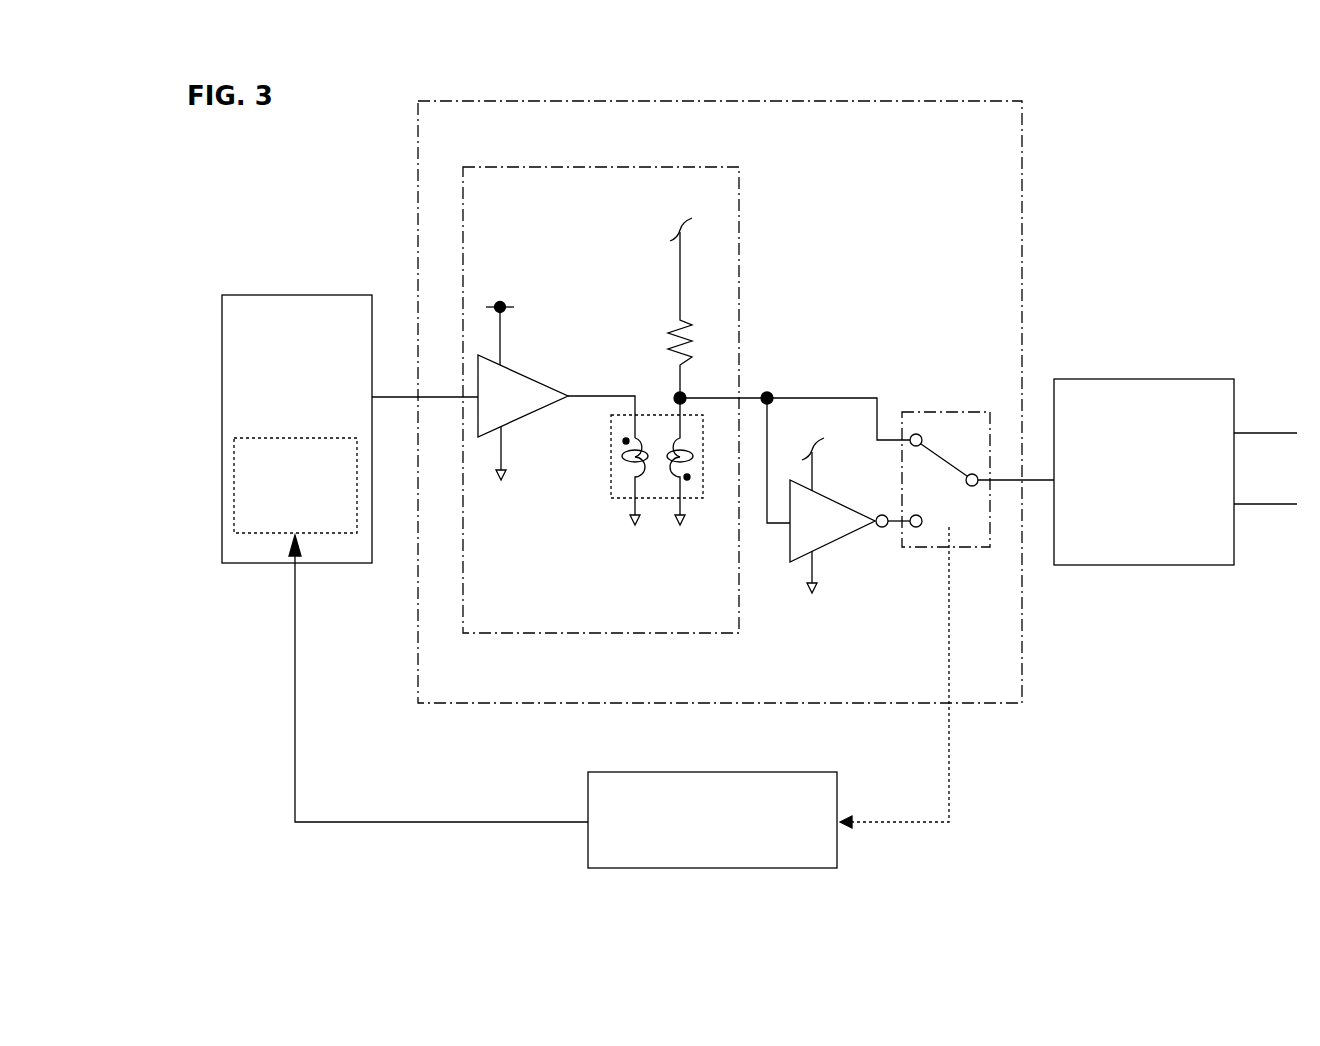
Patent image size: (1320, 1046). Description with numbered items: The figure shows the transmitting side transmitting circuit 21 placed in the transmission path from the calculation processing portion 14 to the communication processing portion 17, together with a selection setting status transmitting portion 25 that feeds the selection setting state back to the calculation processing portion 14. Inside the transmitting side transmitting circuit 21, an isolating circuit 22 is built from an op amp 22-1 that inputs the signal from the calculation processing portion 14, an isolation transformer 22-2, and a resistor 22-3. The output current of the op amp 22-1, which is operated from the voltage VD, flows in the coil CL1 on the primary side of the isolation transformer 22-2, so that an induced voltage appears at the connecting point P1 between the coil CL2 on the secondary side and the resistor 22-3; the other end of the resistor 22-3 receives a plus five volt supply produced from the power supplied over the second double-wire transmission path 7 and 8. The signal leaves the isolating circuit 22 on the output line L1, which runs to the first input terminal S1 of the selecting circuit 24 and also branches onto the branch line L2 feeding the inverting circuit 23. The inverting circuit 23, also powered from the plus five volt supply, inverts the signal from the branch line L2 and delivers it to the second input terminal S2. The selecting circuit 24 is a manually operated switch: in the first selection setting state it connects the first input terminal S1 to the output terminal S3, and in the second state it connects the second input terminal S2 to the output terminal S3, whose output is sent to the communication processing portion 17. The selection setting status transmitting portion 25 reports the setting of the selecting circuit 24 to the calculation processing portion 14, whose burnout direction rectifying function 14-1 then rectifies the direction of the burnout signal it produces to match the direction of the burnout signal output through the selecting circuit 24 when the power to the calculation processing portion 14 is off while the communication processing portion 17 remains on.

The calculation processing portion 14 is at (262, 294).
The burnout direction rectifying function 14-1 is at (234, 482).
The transmitting side transmitting circuit 21 is at (975, 100).
The isolating circuit 22 is at (741, 186).
The op amp 22-1 is at (524, 380).
The isolation transformer 22-2 is at (639, 480).
The resistor 22-3 is at (660, 326).
The inverting circuit 23 is at (826, 541).
The selecting circuit 24 is at (946, 479).
The selection setting status transmitting portion 25 is at (839, 786).
The communication processing portion 17 is at (1168, 378).
The second double-wire transmission path 7 is at (1272, 432).
The second double-wire transmission path 8 is at (1268, 505).
The connecting point P1 is at (662, 398).
The output line L1 is at (742, 396).
The branch line L2 is at (778, 527).
The first input terminal S1 is at (910, 437).
The second input terminal S2 is at (916, 528).
The output terminal S3 is at (972, 473).
The coil on the primary side CL1 is at (623, 450).
The coil on the secondary side CL2 is at (690, 460).